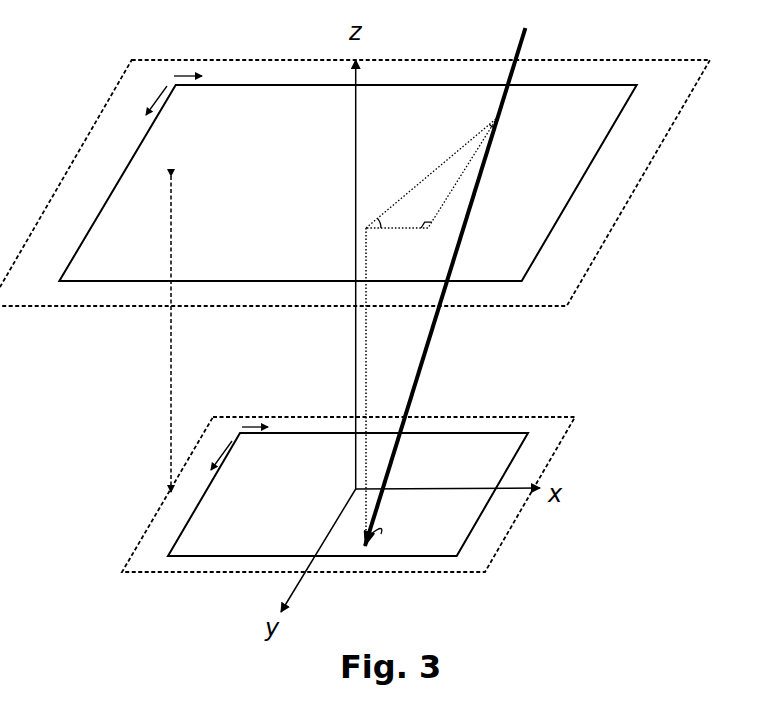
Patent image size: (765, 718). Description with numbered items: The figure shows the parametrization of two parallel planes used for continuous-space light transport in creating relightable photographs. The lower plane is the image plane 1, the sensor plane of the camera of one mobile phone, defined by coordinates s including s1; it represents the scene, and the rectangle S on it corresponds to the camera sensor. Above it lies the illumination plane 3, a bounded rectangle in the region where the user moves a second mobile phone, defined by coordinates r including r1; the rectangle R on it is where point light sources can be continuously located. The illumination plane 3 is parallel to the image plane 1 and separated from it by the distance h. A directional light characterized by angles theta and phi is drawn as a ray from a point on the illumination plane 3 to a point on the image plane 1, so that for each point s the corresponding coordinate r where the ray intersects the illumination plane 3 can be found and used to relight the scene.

The image plane 1 is at (518, 453).
The illumination plane 3 is at (555, 225).
The distance h is at (249, 334).
The first image plane coordinate s1 is at (431, 293).
The first illumination plane coordinate r1 is at (450, 180).